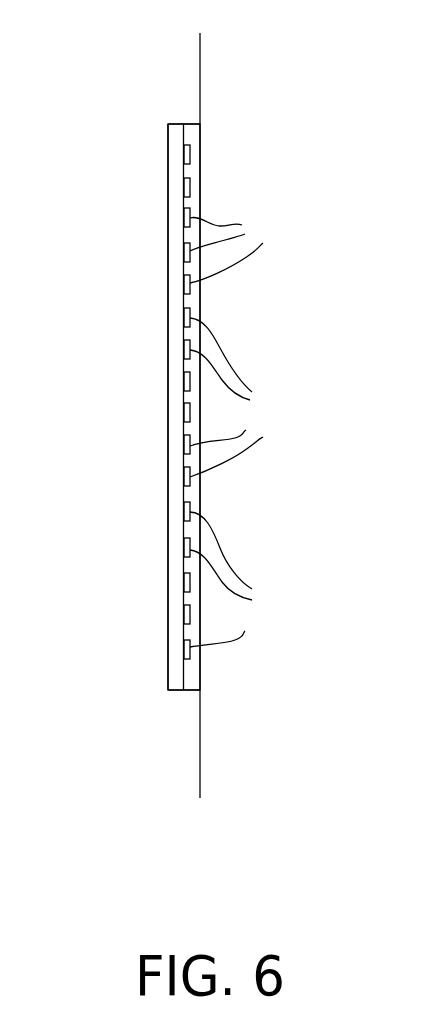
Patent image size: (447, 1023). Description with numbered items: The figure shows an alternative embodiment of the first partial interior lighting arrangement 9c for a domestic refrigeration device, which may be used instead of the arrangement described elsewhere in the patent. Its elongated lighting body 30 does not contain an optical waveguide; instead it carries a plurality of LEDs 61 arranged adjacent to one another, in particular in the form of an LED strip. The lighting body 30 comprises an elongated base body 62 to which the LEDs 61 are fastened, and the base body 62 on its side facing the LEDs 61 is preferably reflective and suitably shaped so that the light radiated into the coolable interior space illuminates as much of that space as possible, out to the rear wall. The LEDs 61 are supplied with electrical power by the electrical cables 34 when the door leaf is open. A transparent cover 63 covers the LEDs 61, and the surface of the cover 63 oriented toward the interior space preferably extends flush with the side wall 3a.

The elongated lighting body 30 is at (127, 423).
The electrical cables 34 is at (172, 125).
The LEDs 61 is at (190, 155).
The elongated base body 62 is at (176, 551).
The transparent cover 63 is at (190, 294).
The first partial interior lighting arrangement 9c is at (232, 128).
The side wall 3a is at (200, 783).